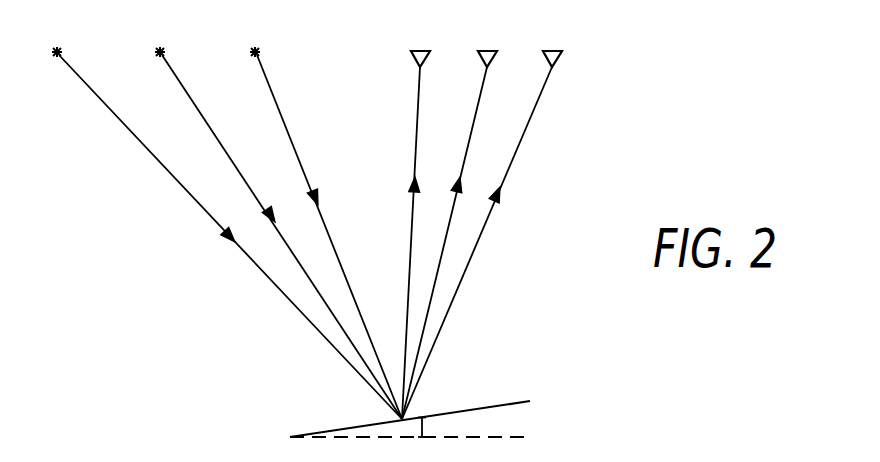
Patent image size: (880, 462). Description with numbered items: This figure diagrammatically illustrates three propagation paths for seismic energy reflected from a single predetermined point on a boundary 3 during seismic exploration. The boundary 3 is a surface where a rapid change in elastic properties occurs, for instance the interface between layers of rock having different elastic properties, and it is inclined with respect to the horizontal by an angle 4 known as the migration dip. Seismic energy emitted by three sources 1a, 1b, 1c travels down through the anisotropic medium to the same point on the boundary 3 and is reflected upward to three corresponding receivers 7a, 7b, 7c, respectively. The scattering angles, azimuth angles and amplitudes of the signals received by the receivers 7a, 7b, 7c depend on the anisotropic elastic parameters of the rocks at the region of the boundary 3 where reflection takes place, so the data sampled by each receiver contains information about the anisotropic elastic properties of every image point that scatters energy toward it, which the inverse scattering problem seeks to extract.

The seismic source 1a is at (324, 212).
The seismic source 1b is at (278, 212).
The seismic source 1c is at (225, 212).
The receiver 7a is at (419, 216).
The receiver 7b is at (452, 216).
The receiver 7c is at (484, 216).
The boundary 3 is at (495, 404).
The angle 4 is at (440, 426).